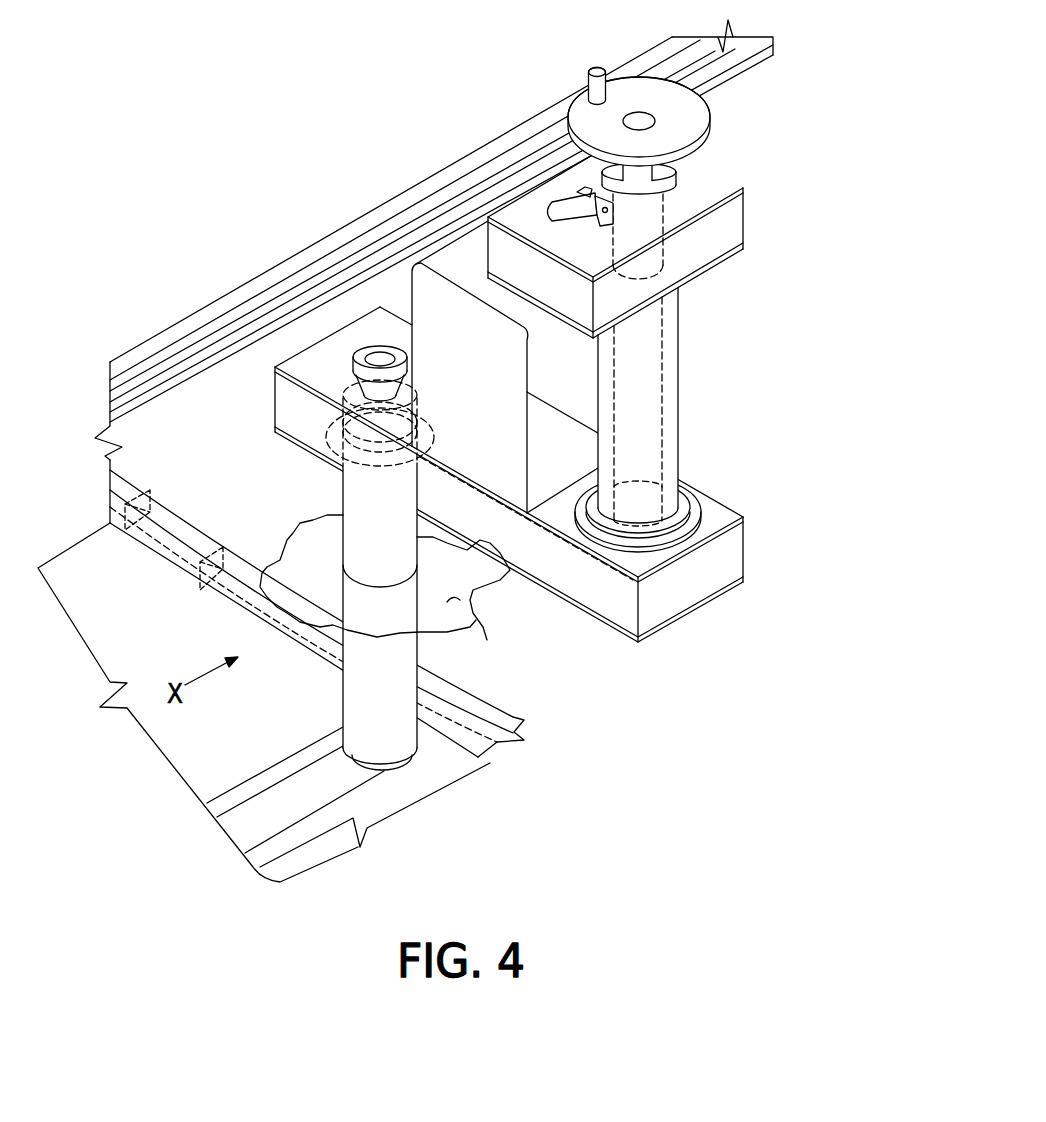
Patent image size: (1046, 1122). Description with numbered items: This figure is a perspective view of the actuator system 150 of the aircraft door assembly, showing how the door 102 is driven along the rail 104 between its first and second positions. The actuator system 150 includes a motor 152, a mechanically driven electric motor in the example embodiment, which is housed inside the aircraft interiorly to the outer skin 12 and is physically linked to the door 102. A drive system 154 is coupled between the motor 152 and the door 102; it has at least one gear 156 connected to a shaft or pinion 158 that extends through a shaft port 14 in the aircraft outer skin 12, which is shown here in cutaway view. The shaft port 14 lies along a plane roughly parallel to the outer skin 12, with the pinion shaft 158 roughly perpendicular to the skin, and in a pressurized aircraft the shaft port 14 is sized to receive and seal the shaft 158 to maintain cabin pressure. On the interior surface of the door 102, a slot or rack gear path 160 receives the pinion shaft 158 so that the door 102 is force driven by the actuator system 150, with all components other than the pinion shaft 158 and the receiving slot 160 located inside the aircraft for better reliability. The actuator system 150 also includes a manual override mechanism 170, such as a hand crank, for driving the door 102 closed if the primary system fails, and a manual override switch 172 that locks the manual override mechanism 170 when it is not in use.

The outer skin 12 is at (487, 640).
The shaft port 14 is at (420, 568).
The door 102 is at (152, 632).
The rail 104 is at (272, 268).
The actuator system 150 is at (777, 362).
The motor 152 is at (433, 307).
The drive system 154 is at (210, 433).
The gear 156 is at (326, 430).
The pinion shaft 158 is at (347, 489).
The rack gear path 160 is at (290, 812).
The manual override mechanism 170 is at (710, 108).
The manual override switch 172 is at (547, 202).